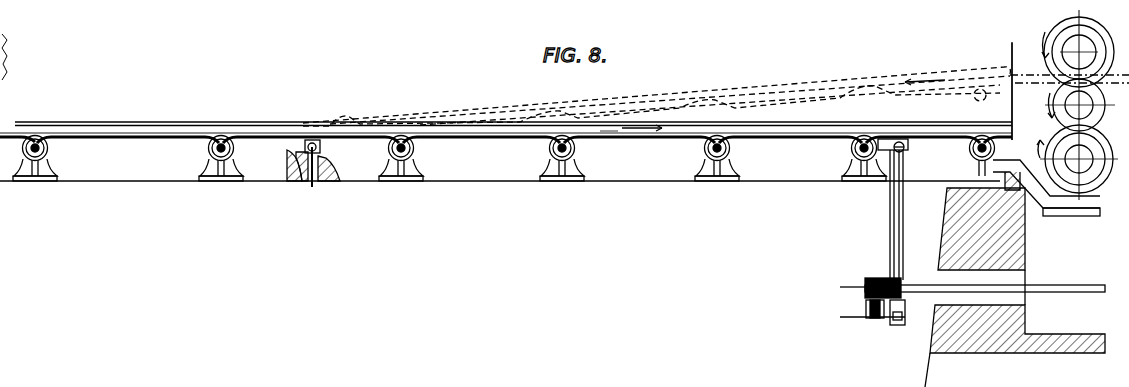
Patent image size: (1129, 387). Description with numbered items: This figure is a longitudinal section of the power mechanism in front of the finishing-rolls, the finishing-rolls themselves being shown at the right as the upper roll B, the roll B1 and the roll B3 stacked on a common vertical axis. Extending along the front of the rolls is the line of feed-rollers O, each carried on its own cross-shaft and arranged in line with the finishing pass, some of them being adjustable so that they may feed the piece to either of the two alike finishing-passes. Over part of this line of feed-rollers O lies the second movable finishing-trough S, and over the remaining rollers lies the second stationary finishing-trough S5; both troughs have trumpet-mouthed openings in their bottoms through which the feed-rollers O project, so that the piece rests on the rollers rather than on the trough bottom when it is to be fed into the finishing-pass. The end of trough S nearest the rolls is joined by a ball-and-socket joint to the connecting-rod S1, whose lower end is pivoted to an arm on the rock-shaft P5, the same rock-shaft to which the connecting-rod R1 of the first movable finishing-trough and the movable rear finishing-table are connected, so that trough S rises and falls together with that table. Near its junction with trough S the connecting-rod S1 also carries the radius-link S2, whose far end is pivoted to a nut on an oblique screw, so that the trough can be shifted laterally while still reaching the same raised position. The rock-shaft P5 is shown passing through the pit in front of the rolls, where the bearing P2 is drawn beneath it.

The second stationary finishing-trough S5 is at (145, 127).
The feed-rollers O is at (48, 156).
The rock-shaft P5 is at (322, 168).
The second movable finishing-trough S is at (800, 130).
The radius-link S2 is at (900, 151).
The connecting-rod R1 is at (889, 205).
The connecting-rod S1 is at (904, 212).
The bearing block P2 is at (885, 320).
The finishing-roll B is at (1048, 34).
The middle feed roll B3 is at (1046, 100).
The finishing-roll B1 is at (1042, 146).